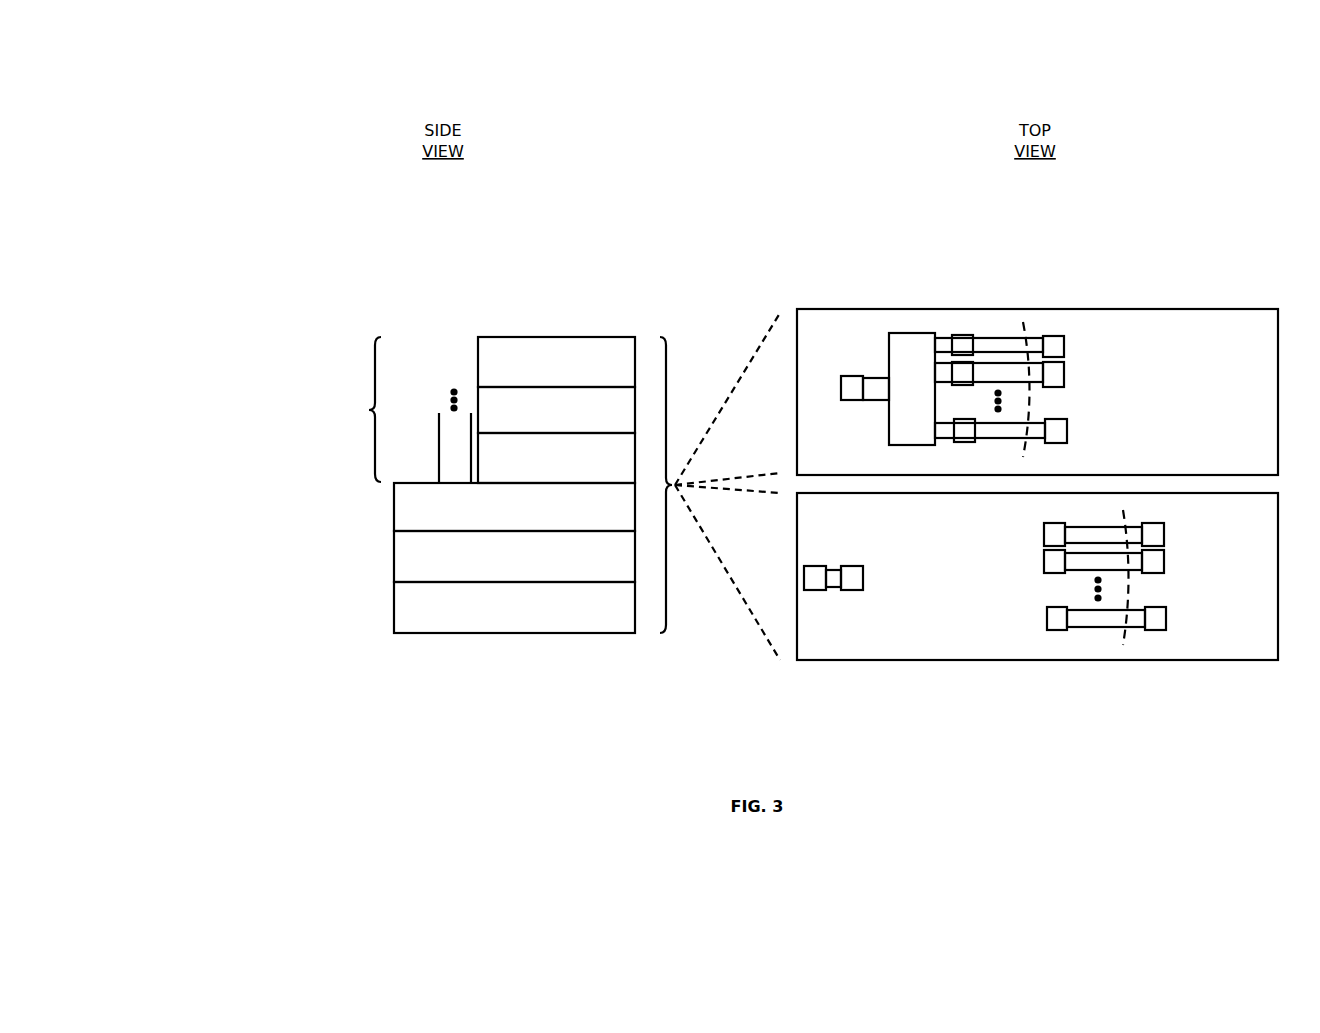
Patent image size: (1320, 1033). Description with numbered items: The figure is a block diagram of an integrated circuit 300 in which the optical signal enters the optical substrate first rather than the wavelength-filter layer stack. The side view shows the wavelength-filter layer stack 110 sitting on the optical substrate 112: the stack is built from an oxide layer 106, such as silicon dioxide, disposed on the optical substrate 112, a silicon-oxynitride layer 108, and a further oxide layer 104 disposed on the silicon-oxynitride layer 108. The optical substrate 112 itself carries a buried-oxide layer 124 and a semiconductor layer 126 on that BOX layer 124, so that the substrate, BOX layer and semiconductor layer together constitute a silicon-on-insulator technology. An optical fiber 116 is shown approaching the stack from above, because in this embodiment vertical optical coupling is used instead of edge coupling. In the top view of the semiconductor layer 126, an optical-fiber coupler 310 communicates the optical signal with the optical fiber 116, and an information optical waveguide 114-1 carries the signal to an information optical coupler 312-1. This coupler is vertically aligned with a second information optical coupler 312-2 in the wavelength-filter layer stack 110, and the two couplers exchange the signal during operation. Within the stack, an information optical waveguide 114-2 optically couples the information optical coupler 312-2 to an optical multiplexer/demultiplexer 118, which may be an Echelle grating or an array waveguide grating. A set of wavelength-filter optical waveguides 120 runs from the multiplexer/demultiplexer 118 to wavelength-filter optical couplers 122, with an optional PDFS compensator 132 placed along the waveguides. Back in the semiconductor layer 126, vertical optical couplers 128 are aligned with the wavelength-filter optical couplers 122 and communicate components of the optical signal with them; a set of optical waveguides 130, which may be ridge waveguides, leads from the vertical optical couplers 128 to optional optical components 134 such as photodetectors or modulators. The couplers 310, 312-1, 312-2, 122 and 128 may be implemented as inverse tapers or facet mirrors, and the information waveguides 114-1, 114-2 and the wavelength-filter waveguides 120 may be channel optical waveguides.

The integrated circuit 300 is at (350, 100).
The wavelength-filter layer stack 110 is at (291, 409).
The optical fiber 116 is at (447, 448).
The oxide layer 104 is at (556, 362).
The silicon-oxynitride (SiON) layer 108 is at (878, 392).
The oxide layer 106 is at (556, 458).
The semiconductor layer 126 is at (836, 571).
The buried-oxide (BOX) layer 124 is at (514, 556).
The optical substrate 112 is at (514, 607).
The information optical coupler 312-2 is at (853, 388).
The information optical waveguide 114-2 is at (876, 384).
The optical multiplexer/demultiplexer 118 is at (914, 370).
The polarization-dependent-frequency-shift (PDFS) compensator 132 is at (968, 428).
The set of wavelength-filter optical waveguides 120 is at (1027, 325).
The wavelength-filter optical couplers 122 is at (1053, 345).
The optical-fiber (O-F) coupler 310 is at (815, 580).
The information optical waveguide 114-1 is at (835, 577).
The information optical coupler 312-1 is at (852, 575).
The vertical optical couplers 128 is at (1056, 533).
The set of optical waveguides 130 is at (1123, 645).
The optical components 134 is at (1152, 535).